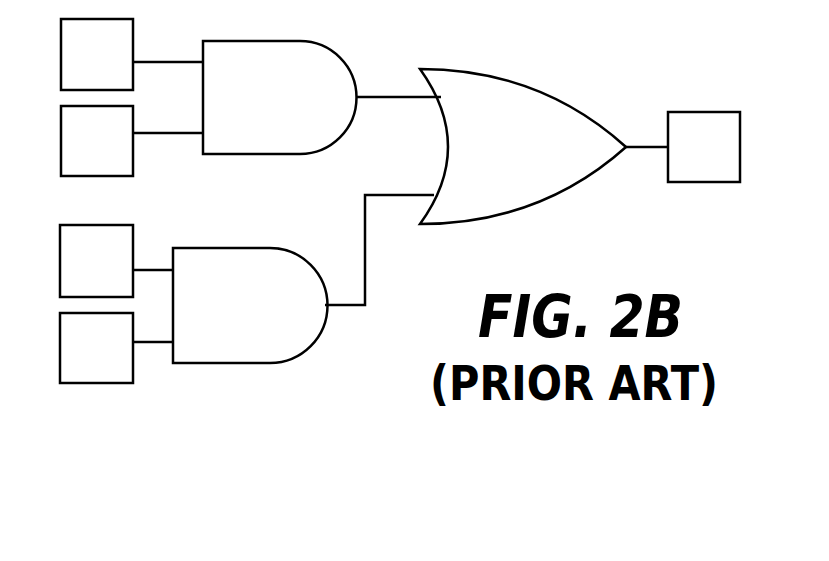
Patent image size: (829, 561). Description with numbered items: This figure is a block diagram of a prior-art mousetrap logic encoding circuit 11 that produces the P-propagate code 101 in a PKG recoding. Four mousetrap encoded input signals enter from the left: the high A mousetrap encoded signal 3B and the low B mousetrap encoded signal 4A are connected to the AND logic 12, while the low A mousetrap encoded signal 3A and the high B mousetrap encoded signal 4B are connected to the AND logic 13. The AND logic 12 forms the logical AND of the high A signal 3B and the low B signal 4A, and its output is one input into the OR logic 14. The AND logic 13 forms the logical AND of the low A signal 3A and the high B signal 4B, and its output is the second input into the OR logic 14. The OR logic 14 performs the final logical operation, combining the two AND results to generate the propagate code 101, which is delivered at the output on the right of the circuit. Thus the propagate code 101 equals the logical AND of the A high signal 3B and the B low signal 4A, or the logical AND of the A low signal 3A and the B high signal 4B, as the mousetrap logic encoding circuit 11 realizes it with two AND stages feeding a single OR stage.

The mousetrap logic encoding circuit 11 is at (368, 42).
The AND logic 12 is at (256, 136).
The AND logic 13 is at (226, 343).
The OR logic 14 is at (498, 201).
The propagate code 101 is at (684, 173).
The high A mousetrap encoded signal 3B is at (80, 82).
The low B mousetrap encoded signal 4A is at (80, 168).
The low A mousetrap encoded signal 3A is at (80, 287).
The high B mousetrap encoded signal 4B is at (80, 375).